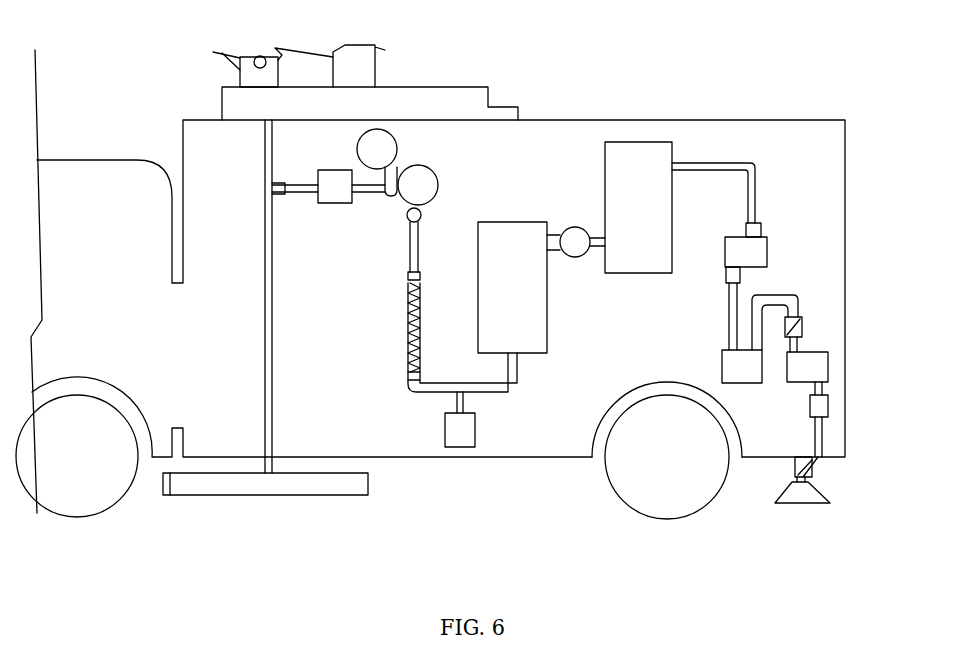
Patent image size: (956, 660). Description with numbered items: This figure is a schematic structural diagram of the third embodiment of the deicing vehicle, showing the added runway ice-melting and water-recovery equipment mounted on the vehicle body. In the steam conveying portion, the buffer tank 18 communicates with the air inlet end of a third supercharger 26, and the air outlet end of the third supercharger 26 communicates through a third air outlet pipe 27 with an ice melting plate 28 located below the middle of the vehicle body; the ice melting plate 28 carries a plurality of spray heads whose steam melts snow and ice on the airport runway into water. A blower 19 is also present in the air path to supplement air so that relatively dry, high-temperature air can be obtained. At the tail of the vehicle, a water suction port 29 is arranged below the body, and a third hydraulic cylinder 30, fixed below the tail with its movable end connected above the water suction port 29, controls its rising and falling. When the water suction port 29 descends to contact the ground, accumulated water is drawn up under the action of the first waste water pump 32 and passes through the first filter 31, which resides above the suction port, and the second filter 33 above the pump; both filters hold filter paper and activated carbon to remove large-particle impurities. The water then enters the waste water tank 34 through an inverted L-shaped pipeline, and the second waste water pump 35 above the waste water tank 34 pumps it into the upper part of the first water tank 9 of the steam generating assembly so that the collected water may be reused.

The first water tank 9 is at (632, 220).
The buffer tank 18 is at (418, 185).
The blower 19 is at (377, 150).
The third supercharger 26 is at (338, 185).
The third air outlet pipe 27 is at (285, 188).
The ice melting plate 28 is at (240, 483).
The water suction port 29 is at (808, 495).
The third hydraulic cylinder 30 is at (803, 463).
The first filter 31 is at (818, 407).
The first waste water pump 32 is at (808, 365).
The second filter 33 is at (742, 368).
The waste water tank 34 is at (798, 318).
The second waste water pump 35 is at (743, 253).